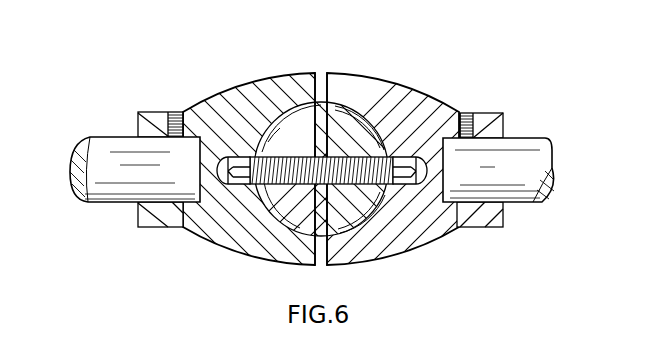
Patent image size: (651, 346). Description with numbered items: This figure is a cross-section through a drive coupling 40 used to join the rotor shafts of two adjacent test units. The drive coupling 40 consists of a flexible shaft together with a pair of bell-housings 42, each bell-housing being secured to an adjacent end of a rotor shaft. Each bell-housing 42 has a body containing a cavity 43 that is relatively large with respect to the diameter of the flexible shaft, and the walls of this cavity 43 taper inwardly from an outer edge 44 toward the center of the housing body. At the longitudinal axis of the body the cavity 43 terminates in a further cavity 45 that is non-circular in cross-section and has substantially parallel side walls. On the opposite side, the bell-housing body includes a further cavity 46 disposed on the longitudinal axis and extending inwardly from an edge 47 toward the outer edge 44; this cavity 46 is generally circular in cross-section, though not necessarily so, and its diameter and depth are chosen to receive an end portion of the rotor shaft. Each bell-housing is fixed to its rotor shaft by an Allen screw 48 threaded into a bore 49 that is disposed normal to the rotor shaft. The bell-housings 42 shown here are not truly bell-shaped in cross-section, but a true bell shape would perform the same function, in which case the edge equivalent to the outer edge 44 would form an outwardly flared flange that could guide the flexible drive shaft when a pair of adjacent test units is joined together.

The drive coupling 40 is at (325, 157).
The bell-housings 42 is at (245, 79).
The cavity 43 is at (300, 112).
The outer edge 44 is at (322, 74).
The further cavity 45 is at (264, 141).
The further cavity 46 is at (180, 143).
The edge 47 is at (138, 123).
The Allen screw 48 is at (170, 127).
The bore 49 is at (173, 112).